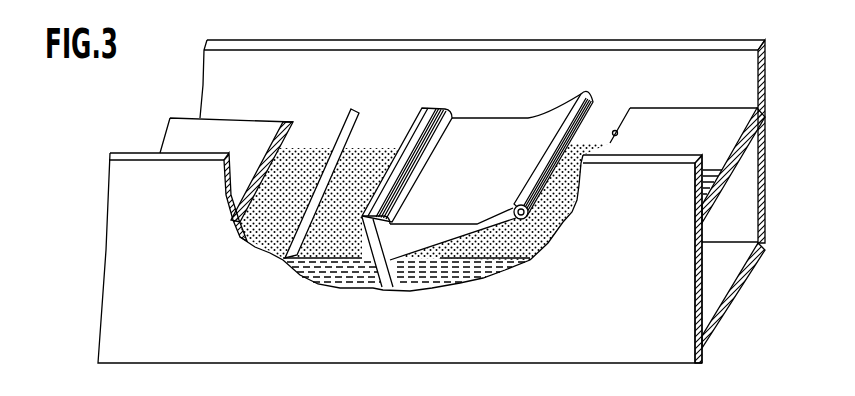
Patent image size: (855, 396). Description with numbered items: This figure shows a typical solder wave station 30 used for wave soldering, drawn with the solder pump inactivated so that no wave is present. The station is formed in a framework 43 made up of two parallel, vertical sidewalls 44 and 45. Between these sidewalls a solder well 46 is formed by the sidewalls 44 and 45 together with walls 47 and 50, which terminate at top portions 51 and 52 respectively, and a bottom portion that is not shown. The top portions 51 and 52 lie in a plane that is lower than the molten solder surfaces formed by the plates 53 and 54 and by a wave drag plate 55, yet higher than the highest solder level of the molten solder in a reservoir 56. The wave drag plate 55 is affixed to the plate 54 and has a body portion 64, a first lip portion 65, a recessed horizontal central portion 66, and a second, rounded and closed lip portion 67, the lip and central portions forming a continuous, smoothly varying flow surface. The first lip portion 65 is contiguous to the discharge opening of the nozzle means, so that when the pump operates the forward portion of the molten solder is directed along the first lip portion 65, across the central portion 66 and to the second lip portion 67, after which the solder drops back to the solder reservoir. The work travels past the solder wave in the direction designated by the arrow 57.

The solder wave station 30 is at (313, 38).
The framework 43 is at (107, 305).
The sidewall 44 is at (695, 297).
The sidewall 45 is at (765, 196).
The solder well 46 is at (388, 113).
The wall 47 is at (281, 148).
The wall 50 is at (617, 135).
The top portion 51 is at (170, 138).
The top portion 52 is at (682, 115).
The plate 53 is at (347, 107).
The plate 54 is at (423, 107).
The wave drag plate 55 is at (480, 117).
The reservoir 56 is at (612, 115).
The arrow 57 is at (492, 23).
The body portion 64 is at (457, 237).
The first lip portion 65 is at (393, 203).
The recessed horizontal central portion 66 is at (440, 220).
The second lip portion 67 is at (563, 200).